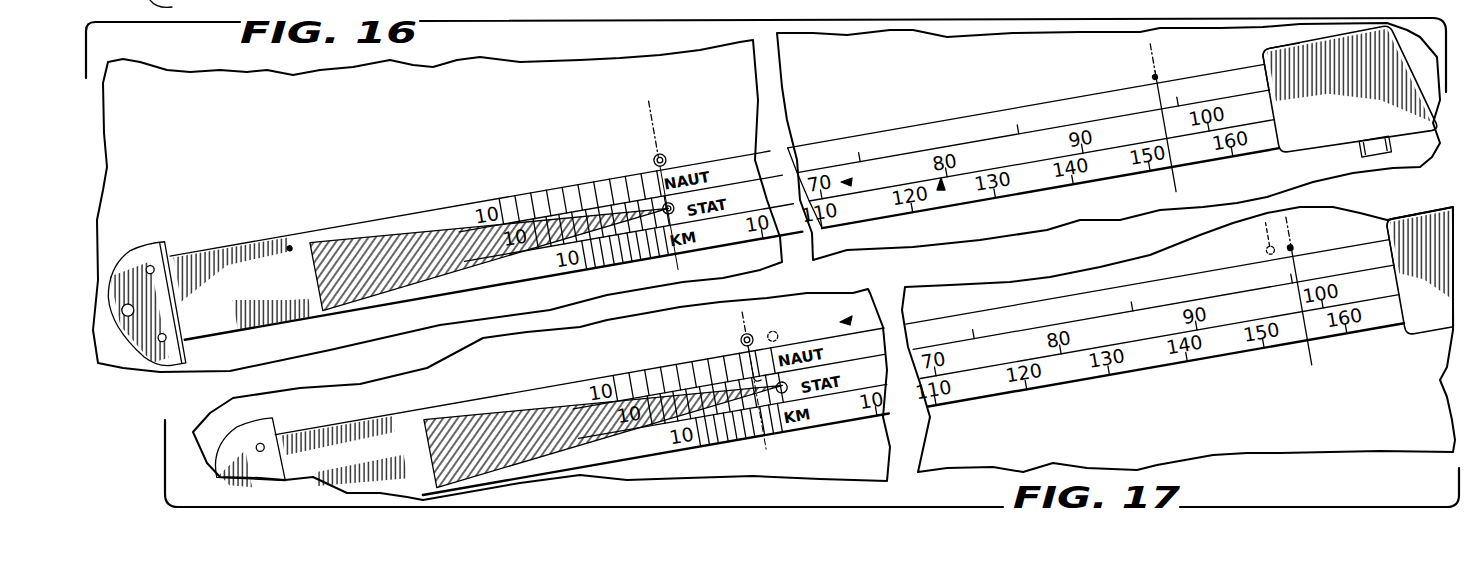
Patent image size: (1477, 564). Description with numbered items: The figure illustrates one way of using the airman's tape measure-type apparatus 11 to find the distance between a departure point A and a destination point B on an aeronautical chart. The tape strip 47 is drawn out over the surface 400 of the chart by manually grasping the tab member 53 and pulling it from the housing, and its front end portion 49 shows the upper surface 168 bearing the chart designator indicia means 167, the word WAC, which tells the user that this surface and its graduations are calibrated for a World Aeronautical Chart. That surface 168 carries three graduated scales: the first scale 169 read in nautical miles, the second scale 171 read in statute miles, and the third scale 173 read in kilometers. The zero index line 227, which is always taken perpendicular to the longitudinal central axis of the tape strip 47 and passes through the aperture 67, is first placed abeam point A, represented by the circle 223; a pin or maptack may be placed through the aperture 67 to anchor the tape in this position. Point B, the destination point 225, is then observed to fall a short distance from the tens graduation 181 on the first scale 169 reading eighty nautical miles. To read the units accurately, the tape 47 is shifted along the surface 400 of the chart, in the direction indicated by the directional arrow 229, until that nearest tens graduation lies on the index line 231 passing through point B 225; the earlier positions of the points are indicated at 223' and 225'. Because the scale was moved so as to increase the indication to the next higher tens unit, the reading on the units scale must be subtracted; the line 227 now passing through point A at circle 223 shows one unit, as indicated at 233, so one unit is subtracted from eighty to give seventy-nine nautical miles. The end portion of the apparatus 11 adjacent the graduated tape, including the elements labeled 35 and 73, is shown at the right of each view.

In FIG. 16, the airman's tape measure-type apparatus 11 is at (1400, 82).
In FIG. 17, the airman's tape measure-type apparatus 11 is at (1436, 238).
In FIG. 16, the end cap 35 is at (1262, 63).
In FIG. 17, the end cap 35 is at (1385, 262).
In FIG. 16, the tape strip 47 is at (1018, 97).
In FIG. 17, the tape strip 47 is at (1015, 398).
In FIG. 16, the front end portion 49 is at (292, 240).
In FIG. 17, the front end portion 49 is at (370, 428).
In FIG. 16, the tab member 53 is at (113, 262).
In FIG. 17, the tab member 53 is at (235, 462).
In FIG. 16, the aperture 67 is at (663, 205).
In FIG. 17, the aperture 67 is at (788, 389).
In FIG. 16, the distance scale 73 is at (884, 127).
In FIG. 17, the distance scale 73 is at (1017, 298).
In FIG. 16, the chart designator indicia means 167 is at (425, 232).
In FIG. 17, the chart designator indicia means 167 is at (505, 412).
In FIG. 16, the upper surface 168 is at (268, 299).
In FIG. 17, the upper surface 168 is at (374, 469).
In FIG. 16, the first scale 169 is at (814, 158).
In FIG. 16, the second scale 171 is at (853, 183).
In FIG. 16, the third scale 173 is at (942, 190).
In FIG. 16, the tens graduation 181 is at (1178, 178).
In FIG. 16, the circle representing point A 223 is at (687, 145).
In FIG. 17, the circle representing point A 223 is at (710, 321).
In FIG. 17, the alternate pivot point 223' is at (798, 326).
In FIG. 16, the destination point 225 is at (1173, 57).
In FIG. 17, the destination point 225 is at (1329, 219).
In FIG. 17, the alternate index mark 225' is at (1291, 226).
In FIG. 16, the zero index line 227 is at (651, 119).
In FIG. 17, the zero index line 227 is at (746, 320).
In FIG. 17, the directional arrow 229 is at (843, 320).
In FIG. 16, the index line 231 is at (1158, 100).
In FIG. 17, the index line 231 is at (1314, 350).
In FIG. 17, the one unit reading 233 is at (745, 368).
In FIG. 16, the surface of the map or chart 400 is at (571, 106).